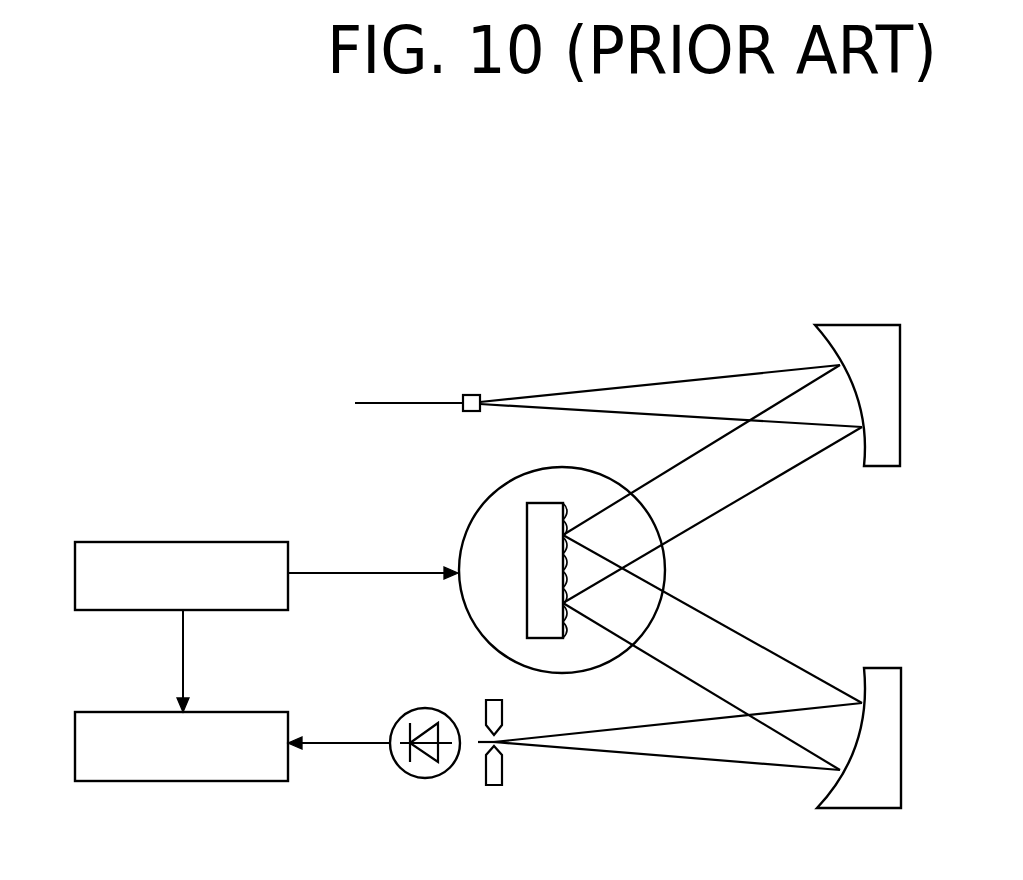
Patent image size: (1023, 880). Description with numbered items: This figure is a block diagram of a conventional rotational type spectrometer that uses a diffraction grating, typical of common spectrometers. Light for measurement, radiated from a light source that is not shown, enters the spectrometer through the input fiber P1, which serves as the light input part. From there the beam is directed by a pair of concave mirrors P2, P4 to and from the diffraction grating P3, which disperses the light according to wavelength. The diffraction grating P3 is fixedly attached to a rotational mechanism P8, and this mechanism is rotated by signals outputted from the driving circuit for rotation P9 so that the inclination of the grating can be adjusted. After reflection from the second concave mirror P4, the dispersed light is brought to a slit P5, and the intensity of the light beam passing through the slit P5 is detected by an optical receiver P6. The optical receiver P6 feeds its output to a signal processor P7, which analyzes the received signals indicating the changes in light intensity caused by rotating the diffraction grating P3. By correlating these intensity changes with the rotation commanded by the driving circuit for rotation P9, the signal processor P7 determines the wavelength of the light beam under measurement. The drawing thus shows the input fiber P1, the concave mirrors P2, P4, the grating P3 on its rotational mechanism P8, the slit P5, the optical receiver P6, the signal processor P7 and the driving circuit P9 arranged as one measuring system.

The input fiber P1 is at (373, 404).
The concave mirror P2 is at (900, 420).
The diffraction grating P3 is at (542, 577).
The concave mirror P4 is at (901, 765).
The slit P5 is at (498, 773).
The optical receiver P6 is at (410, 768).
The signal processor P7 is at (132, 781).
The rotational mechanism P8 is at (472, 592).
The driving circuit for rotation P9 is at (137, 542).